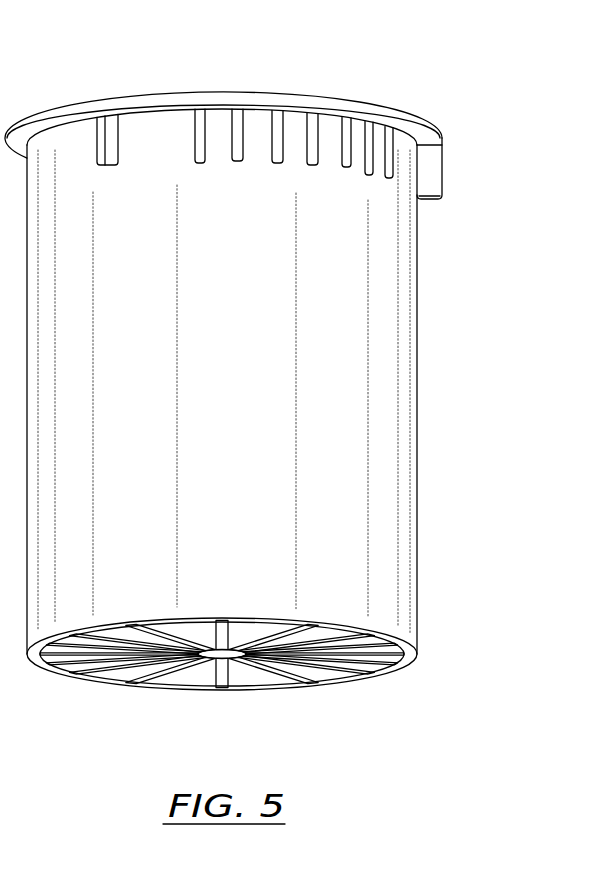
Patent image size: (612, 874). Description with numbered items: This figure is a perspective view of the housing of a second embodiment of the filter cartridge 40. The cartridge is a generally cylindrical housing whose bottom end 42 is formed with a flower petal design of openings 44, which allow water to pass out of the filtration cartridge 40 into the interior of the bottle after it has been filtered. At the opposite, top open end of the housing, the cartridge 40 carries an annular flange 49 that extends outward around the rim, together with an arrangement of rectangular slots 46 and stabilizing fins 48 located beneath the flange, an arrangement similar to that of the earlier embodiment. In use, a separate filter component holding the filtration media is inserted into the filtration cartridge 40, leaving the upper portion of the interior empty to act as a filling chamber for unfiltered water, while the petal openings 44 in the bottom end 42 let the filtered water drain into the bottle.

The filter cartridge 40 is at (418, 408).
The bottom end 42 is at (137, 690).
The openings 44 is at (308, 672).
The rectangular slots 46 is at (198, 112).
The stabilizing fins 48 is at (97, 114).
The annular flange 49 is at (308, 96).